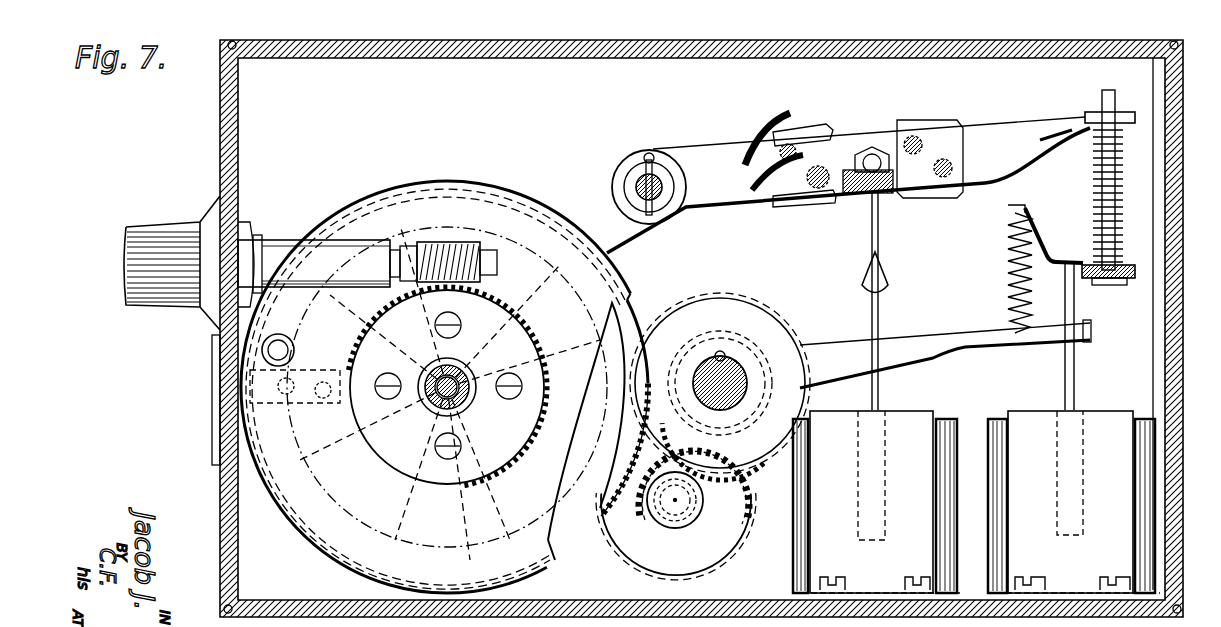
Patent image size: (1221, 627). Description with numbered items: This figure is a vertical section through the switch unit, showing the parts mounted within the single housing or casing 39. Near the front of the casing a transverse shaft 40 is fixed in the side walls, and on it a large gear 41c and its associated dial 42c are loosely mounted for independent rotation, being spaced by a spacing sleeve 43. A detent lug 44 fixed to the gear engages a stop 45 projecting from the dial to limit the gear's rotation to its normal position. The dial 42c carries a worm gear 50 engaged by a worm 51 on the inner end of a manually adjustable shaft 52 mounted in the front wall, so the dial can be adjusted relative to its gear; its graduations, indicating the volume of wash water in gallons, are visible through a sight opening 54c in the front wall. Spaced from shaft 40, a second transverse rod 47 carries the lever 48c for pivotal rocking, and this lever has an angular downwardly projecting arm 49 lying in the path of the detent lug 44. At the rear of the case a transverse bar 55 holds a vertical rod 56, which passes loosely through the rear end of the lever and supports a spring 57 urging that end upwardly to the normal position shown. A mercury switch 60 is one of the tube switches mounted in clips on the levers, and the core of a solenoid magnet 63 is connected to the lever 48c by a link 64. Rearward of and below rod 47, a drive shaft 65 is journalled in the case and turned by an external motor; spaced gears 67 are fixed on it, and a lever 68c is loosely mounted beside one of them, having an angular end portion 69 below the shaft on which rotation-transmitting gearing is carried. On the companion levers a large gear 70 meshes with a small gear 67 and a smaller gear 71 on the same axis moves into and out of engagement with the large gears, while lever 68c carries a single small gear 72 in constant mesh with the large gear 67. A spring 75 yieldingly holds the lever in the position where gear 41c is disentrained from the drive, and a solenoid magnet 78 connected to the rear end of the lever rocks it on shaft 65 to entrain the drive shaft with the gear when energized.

The switch casing 39 is at (1196, 178).
The transverse shaft 40 is at (435, 392).
The large gear 41c is at (640, 330).
The dial 42c is at (510, 205).
The spacing sleeve 43 is at (462, 375).
The detent lug 44 is at (305, 403).
The stop 45 is at (294, 342).
The second transverse rod 47 is at (662, 180).
The lever 48c is at (1012, 130).
The downwardly projecting arm 49 is at (632, 236).
The worm gear 50 is at (490, 301).
The worm 51 is at (457, 251).
The manually adjustable shaft 52 is at (392, 245).
The sight opening 54c is at (212, 398).
The transverse bar 55 is at (1131, 281).
The vertical rod 56 is at (1108, 165).
The spring 57 is at (1100, 188).
The mercury switch 60 is at (846, 148).
The solenoid magnet 63 is at (945, 432).
The link 64 is at (880, 222).
The drive shaft 65 is at (730, 365).
The gear 67 is at (775, 340).
The lever 68c is at (940, 322).
The angular end portion 69 is at (722, 482).
The large gear 70 is at (720, 540).
The smaller gear 71 is at (712, 495).
The rotation transmitting gear 72 is at (652, 506).
The spring 75 is at (1008, 258).
The solenoid magnet 78 is at (1140, 472).